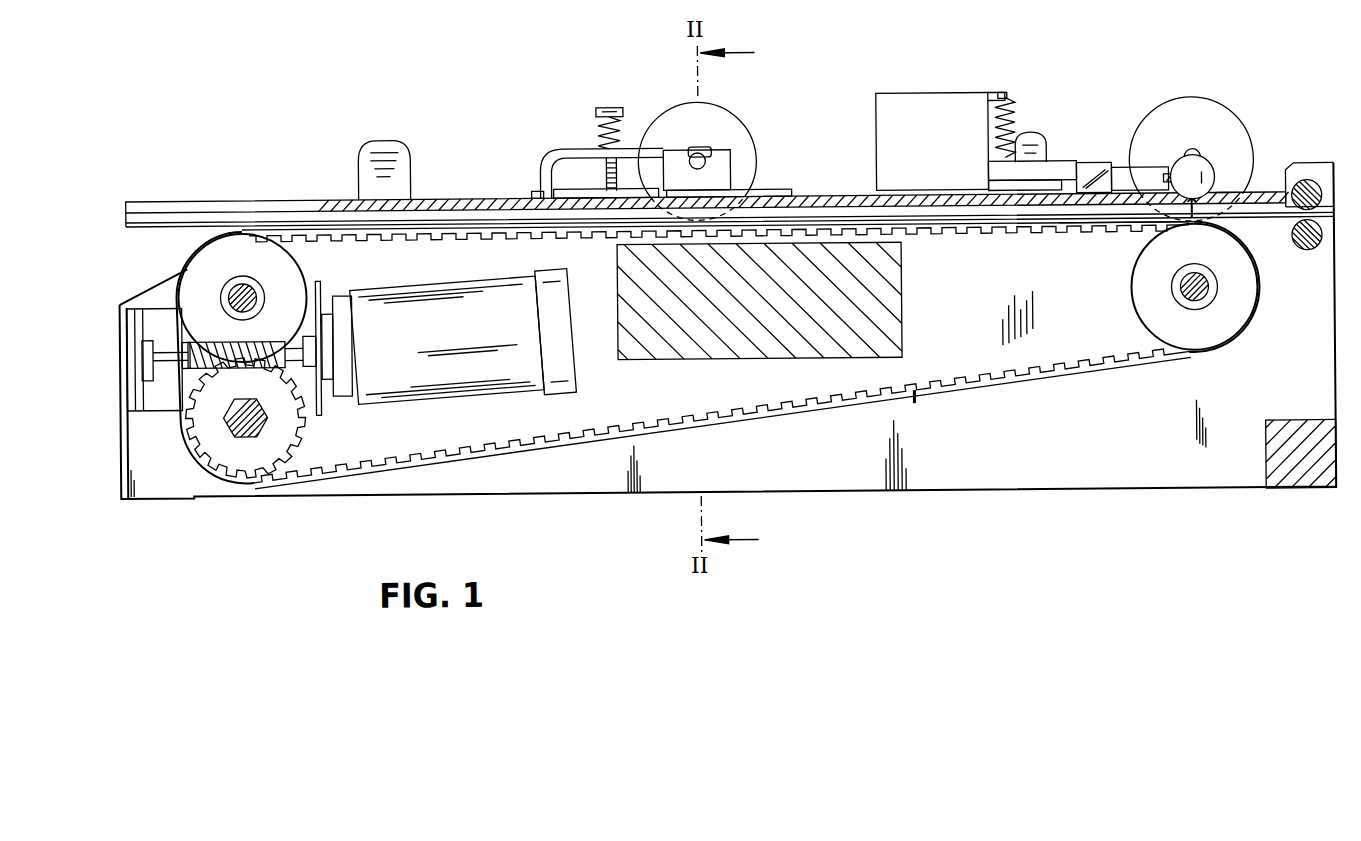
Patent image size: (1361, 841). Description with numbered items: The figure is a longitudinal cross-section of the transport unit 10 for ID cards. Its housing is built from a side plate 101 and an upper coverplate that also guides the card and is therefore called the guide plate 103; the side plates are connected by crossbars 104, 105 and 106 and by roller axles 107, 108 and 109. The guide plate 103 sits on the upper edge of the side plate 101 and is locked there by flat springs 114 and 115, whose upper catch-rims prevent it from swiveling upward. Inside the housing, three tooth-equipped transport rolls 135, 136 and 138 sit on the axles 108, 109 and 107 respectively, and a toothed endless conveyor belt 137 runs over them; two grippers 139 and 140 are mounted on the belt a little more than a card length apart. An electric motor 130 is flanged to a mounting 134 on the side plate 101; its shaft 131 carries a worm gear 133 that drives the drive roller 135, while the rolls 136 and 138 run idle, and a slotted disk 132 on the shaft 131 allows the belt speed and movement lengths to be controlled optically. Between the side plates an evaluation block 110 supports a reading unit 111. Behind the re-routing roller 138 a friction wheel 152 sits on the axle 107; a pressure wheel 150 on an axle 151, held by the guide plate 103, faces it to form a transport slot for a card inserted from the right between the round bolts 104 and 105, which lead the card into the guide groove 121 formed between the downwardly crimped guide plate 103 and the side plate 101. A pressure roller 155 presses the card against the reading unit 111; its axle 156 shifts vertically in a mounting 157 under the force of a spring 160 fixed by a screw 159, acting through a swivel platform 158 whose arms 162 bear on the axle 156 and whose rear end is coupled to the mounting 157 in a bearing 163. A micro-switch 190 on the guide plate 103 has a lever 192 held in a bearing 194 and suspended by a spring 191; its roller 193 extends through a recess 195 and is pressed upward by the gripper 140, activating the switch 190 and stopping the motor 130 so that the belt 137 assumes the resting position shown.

The transport unit 10 is at (452, 197).
The side plate 101 is at (1050, 492).
The upper guide plate 103 is at (845, 196).
The crossbar 104 is at (1308, 186).
The crossbar 105 is at (1302, 260).
The crossbar 106 is at (1291, 425).
The roller axle 107 is at (1185, 296).
The roller axle 108 is at (240, 292).
The roller axle 109 is at (265, 415).
The evaluation block 110 is at (903, 297).
The reading unit 111 is at (665, 237).
The flat spring 114 is at (1035, 136).
The flat spring 115 is at (391, 138).
The guide groove 121 is at (1072, 220).
The electric motor 130 is at (560, 373).
The shaft 131 is at (342, 326).
The slotted disk 132 is at (320, 402).
The worm gear 133 is at (188, 341).
The mounting 134 is at (163, 400).
The transport roll 135 is at (292, 264).
The transport roll 136 is at (248, 480).
The endless conveyor belt 137 is at (767, 412).
The transport roll 138 is at (1137, 294).
The gripper 139 is at (916, 399).
The gripper 140 is at (1225, 232).
The pressure wheel 150 is at (1179, 106).
The axle 151 is at (1200, 167).
The friction wheel 152 is at (1257, 320).
The pressure roller 155 is at (724, 118).
The axle 156 is at (700, 150).
The mounting 157 is at (766, 189).
The swivel platform 158 is at (552, 150).
The screw 159 is at (613, 106).
The spring 160 is at (604, 126).
The arm 162 is at (713, 146).
The bearing 163 is at (540, 188).
The micro-switch 190 is at (935, 95).
The spring 191 is at (1014, 105).
The actuating element 192 is at (1122, 172).
The roller 193 is at (1213, 178).
The bearing 194 is at (1089, 172).
The recess 195 is at (1228, 194).